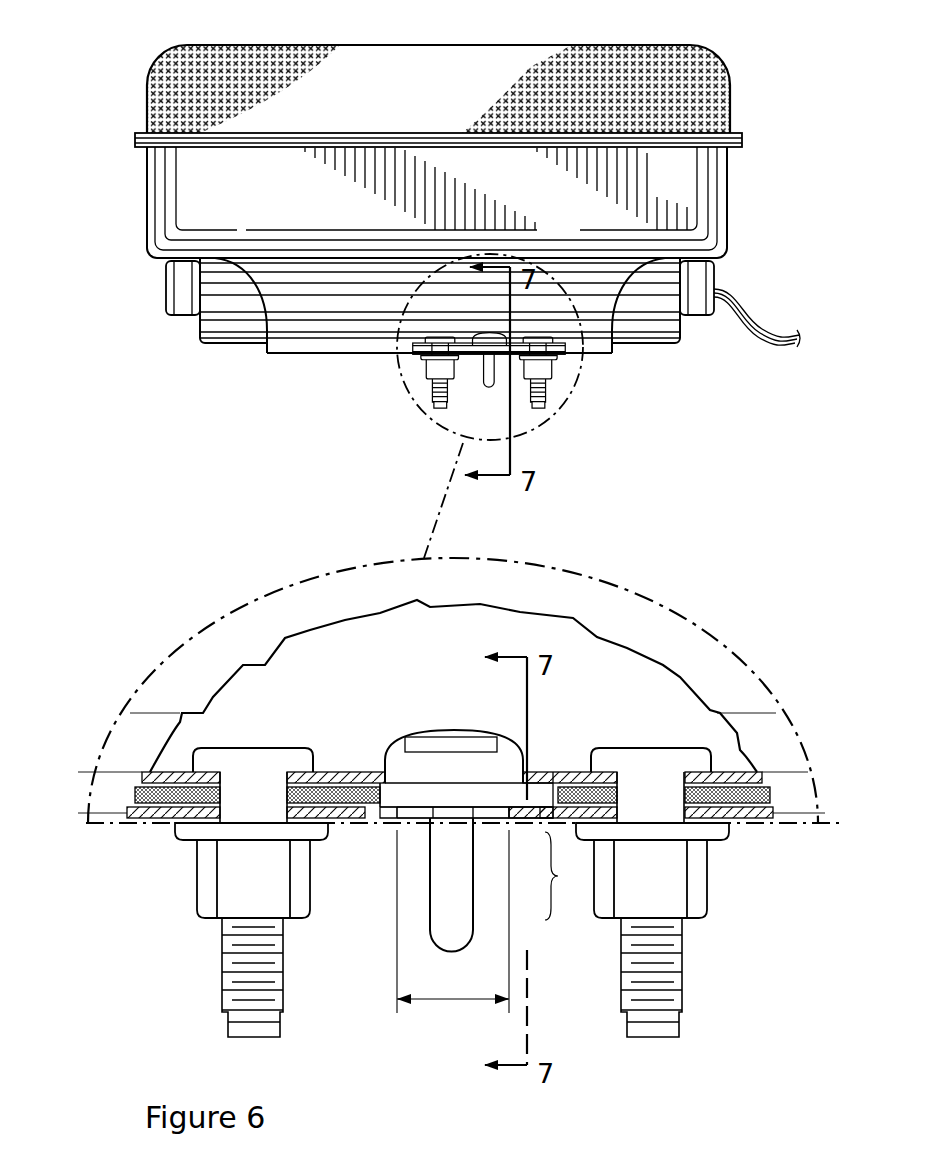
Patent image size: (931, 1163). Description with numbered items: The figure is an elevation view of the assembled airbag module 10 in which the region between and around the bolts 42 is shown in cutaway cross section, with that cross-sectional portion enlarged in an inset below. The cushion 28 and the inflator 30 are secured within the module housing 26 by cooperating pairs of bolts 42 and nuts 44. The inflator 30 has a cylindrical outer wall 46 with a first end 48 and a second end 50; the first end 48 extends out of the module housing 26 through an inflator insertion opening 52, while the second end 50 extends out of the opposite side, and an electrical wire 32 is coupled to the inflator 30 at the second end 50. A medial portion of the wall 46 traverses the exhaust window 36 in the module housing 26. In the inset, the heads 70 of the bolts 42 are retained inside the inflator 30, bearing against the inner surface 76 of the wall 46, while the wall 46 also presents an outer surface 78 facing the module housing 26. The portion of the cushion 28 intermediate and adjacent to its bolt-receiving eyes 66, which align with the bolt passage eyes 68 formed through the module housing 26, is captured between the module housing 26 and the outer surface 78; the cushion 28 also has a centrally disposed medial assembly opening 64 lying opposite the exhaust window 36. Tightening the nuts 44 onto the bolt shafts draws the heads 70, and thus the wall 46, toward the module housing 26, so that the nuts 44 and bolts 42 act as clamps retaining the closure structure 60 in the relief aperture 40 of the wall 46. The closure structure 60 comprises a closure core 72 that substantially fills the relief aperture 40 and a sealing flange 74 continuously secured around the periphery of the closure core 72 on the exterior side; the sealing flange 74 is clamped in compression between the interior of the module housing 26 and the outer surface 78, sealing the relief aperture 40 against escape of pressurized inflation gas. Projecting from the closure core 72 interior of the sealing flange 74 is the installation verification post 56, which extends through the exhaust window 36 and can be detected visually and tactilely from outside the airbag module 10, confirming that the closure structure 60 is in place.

The airbag module 10 is at (140, 54).
The module housing 26 is at (600, 282).
The cushion 28 is at (432, 78).
The inflator 30 is at (160, 294).
The electrical wire 32 is at (750, 297).
The exhaust window 36 is at (445, 1005).
The relief aperture 40 is at (385, 780).
The bolts 42 is at (252, 958).
The nuts 44 is at (252, 893).
The cylindrical outer wall 46 is at (347, 768).
The first end 48 is at (218, 293).
The second end 50 is at (655, 322).
The inflator insertion opening 52 is at (258, 313).
The installation verification post 56 is at (477, 913).
The closure structure 60 is at (413, 315).
The medial assembly opening 64 is at (365, 790).
The bolt-receiving eyes 66 is at (237, 800).
The bolt passage eyes 68 is at (273, 800).
The heads 70 is at (253, 788).
The closure core 72 is at (480, 785).
The sealing flange 74 is at (397, 795).
The inner surface 76 is at (332, 786).
The outer surface 78 is at (320, 788).